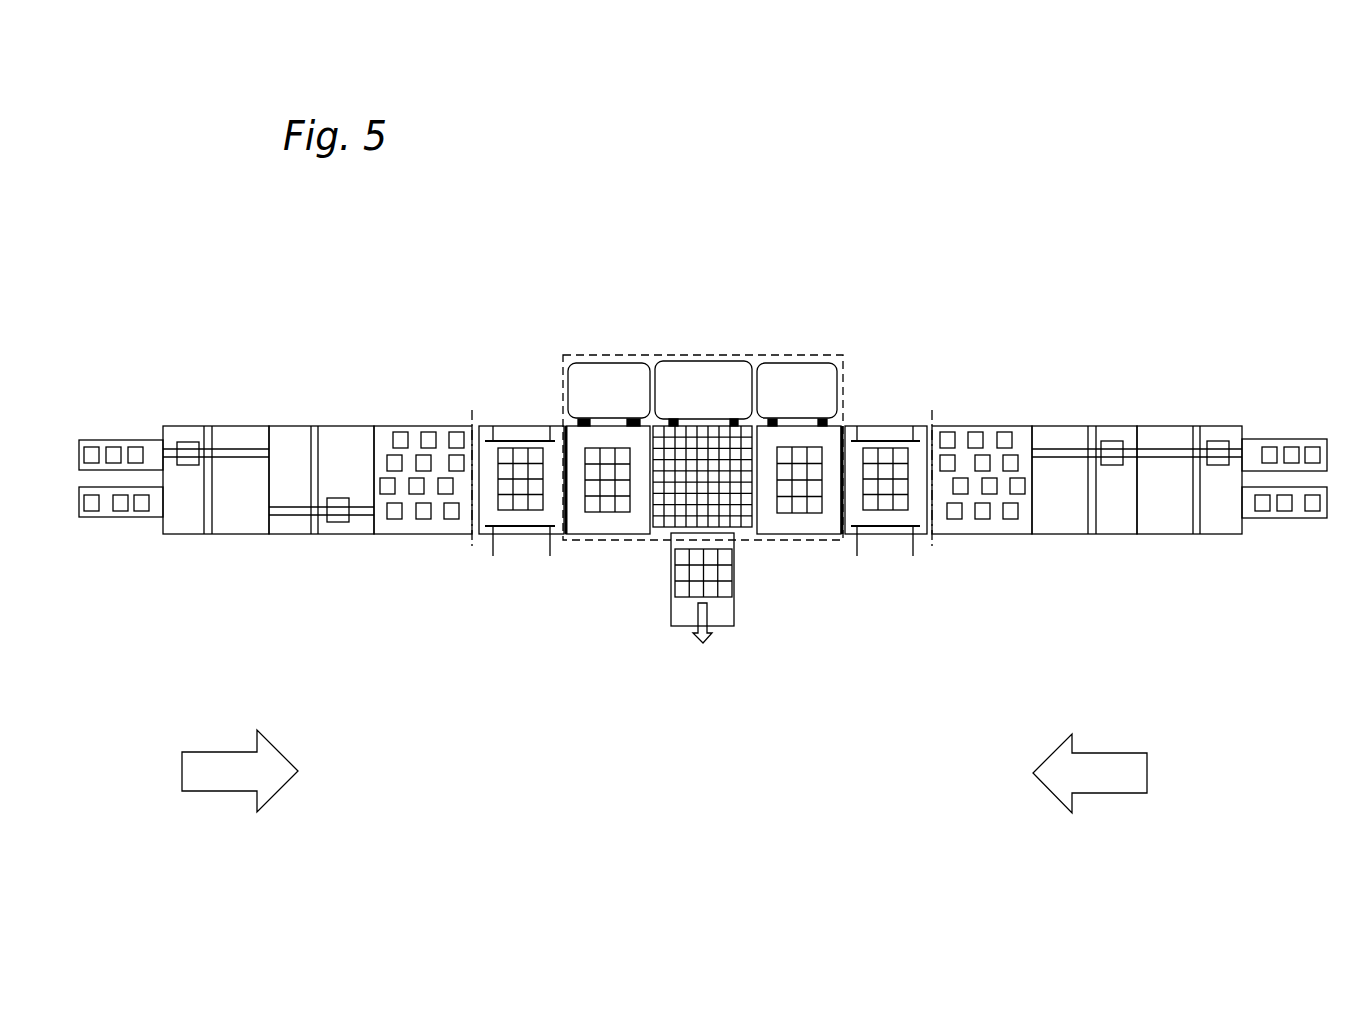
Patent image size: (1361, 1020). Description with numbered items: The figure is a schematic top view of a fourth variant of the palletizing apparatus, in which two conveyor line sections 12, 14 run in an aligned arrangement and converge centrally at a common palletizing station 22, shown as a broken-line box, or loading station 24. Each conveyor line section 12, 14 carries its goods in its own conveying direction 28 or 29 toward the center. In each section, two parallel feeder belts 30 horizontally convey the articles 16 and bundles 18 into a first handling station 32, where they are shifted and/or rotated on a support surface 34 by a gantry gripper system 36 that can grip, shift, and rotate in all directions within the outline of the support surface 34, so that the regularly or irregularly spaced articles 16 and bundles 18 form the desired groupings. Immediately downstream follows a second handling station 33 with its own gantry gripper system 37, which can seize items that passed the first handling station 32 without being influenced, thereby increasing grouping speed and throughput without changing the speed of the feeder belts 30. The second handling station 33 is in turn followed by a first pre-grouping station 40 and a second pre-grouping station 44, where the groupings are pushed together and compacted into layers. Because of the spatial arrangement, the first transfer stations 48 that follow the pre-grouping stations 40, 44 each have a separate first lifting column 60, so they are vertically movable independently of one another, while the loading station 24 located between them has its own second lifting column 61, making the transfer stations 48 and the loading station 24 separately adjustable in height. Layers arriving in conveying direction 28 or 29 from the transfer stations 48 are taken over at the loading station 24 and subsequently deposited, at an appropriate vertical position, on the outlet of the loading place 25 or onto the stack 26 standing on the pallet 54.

The conveyor line section 12 is at (363, 481).
The conveyor line section 14 is at (1091, 394).
The articles 16 is at (150, 377).
The bundles 18 is at (118, 446).
The palletizing station 22 is at (714, 445).
The loading station 24 is at (744, 537).
The loading place 25 is at (690, 618).
The stack 26 is at (682, 588).
The conveying direction 28 is at (240, 771).
The conveying direction 29 is at (1090, 773).
The feeder belts 30 is at (140, 457).
The first handling station 32 is at (215, 515).
The second handling station 33 is at (325, 559).
The support surface 34 is at (257, 527).
The gantry gripper system 36 is at (190, 452).
The gantry gripper system 37 is at (339, 534).
The first pre-grouping station 40 is at (436, 558).
The second pre-grouping station 44 is at (524, 558).
The first transfer stations 48 is at (612, 578).
The pallet 54 is at (724, 612).
The first lifting column 60 is at (606, 388).
The second lifting column 61 is at (710, 378).